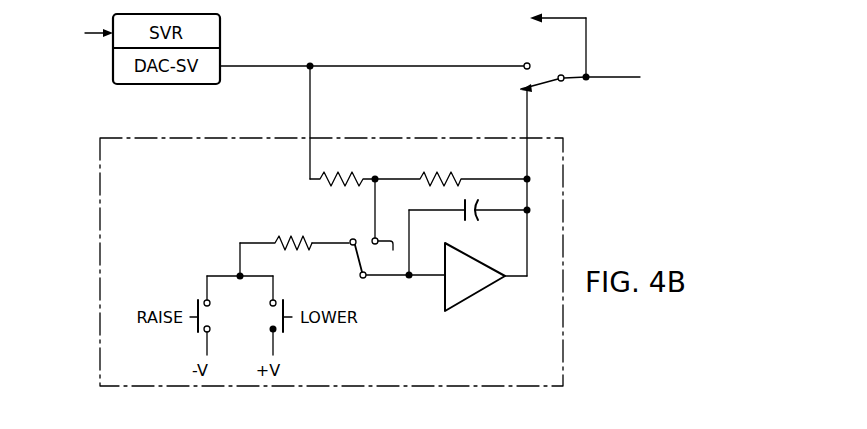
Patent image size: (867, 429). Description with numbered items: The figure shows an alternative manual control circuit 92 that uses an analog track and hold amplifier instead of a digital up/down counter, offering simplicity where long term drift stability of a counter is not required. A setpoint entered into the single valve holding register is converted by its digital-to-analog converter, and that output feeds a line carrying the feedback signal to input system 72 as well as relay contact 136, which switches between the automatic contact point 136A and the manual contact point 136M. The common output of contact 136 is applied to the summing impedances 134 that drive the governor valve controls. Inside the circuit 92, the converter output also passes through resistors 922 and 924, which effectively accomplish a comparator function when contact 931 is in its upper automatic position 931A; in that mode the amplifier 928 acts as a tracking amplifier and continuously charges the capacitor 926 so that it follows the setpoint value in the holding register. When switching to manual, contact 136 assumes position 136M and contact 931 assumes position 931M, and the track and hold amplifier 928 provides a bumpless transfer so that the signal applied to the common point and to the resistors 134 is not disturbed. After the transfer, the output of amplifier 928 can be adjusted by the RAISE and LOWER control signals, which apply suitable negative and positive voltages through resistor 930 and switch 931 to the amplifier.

The input system 72 is at (436, 43).
The manual control circuit 92 is at (563, 235).
The summing impedances 134 is at (707, 78).
The relay contact 136 is at (541, 88).
The automatic contact point 136A is at (545, 46).
The manual contact point 136M is at (522, 90).
The resistor 922 is at (343, 172).
The resistor 924 is at (452, 172).
The capacitor 926 is at (468, 222).
The track and hold amplifier 928 is at (482, 288).
The resistor 930 is at (299, 233).
The switch contact 931 is at (358, 258).
The manual position 931M is at (351, 240).
The automatic position 931A is at (393, 223).